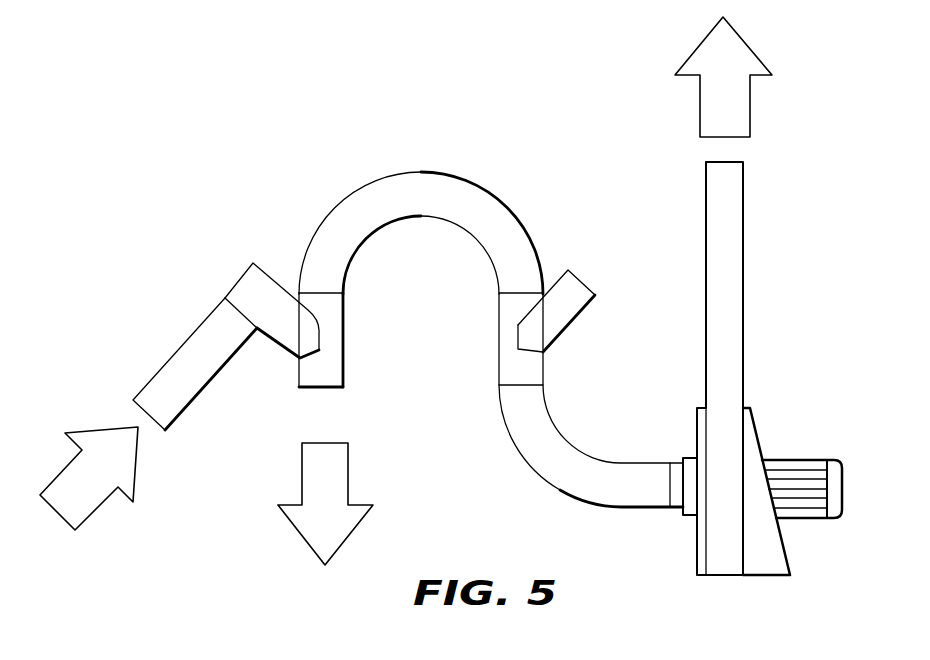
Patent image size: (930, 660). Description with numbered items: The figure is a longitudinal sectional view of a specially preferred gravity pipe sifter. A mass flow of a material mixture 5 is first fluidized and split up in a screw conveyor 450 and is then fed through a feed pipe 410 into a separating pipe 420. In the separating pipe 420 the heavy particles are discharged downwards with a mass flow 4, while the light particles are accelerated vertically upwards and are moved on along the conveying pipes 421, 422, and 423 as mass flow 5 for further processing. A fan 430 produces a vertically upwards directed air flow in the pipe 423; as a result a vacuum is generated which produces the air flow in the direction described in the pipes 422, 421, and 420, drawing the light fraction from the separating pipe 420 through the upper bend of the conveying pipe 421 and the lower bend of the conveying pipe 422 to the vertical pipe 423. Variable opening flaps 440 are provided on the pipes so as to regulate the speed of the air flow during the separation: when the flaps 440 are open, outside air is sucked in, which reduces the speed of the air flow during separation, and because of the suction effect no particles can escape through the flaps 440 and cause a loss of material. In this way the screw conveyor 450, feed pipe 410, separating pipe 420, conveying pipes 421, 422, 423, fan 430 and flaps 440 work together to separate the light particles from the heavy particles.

The mass flow 4 is at (349, 468).
The mass flow of material mixture 5 is at (750, 108).
The feed pipe 410 is at (255, 282).
The separating pipe 420 is at (343, 338).
The conveying pipe 421 is at (420, 175).
The conveying pipe 422 is at (532, 468).
The conveying pipe 423 is at (740, 262).
The fan 430 is at (808, 462).
The variable opening flaps 440 is at (572, 313).
The screw conveyor 450 is at (188, 347).